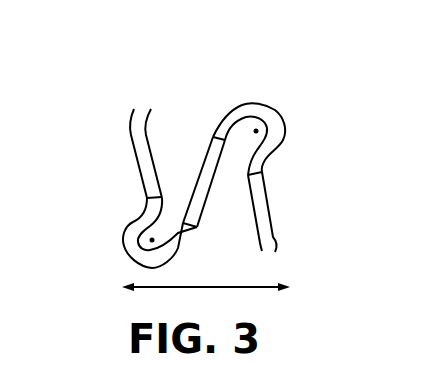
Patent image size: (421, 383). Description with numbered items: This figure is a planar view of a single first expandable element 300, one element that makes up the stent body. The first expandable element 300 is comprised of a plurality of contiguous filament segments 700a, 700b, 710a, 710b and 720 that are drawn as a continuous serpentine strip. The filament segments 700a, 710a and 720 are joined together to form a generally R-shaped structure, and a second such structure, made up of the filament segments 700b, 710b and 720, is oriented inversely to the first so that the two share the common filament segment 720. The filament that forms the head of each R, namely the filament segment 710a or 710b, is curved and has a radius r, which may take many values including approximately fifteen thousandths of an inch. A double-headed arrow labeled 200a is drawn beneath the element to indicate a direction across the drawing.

The first expandable element 300 is at (210, 82).
The filament segment 700a is at (131, 142).
The filament segment 700b is at (270, 219).
The filament segment 710a is at (127, 240).
The filament segment 710b is at (278, 120).
The filament segment 720 is at (210, 172).
The radius r is at (151, 241).
The longitudinal direction 200a is at (241, 288).